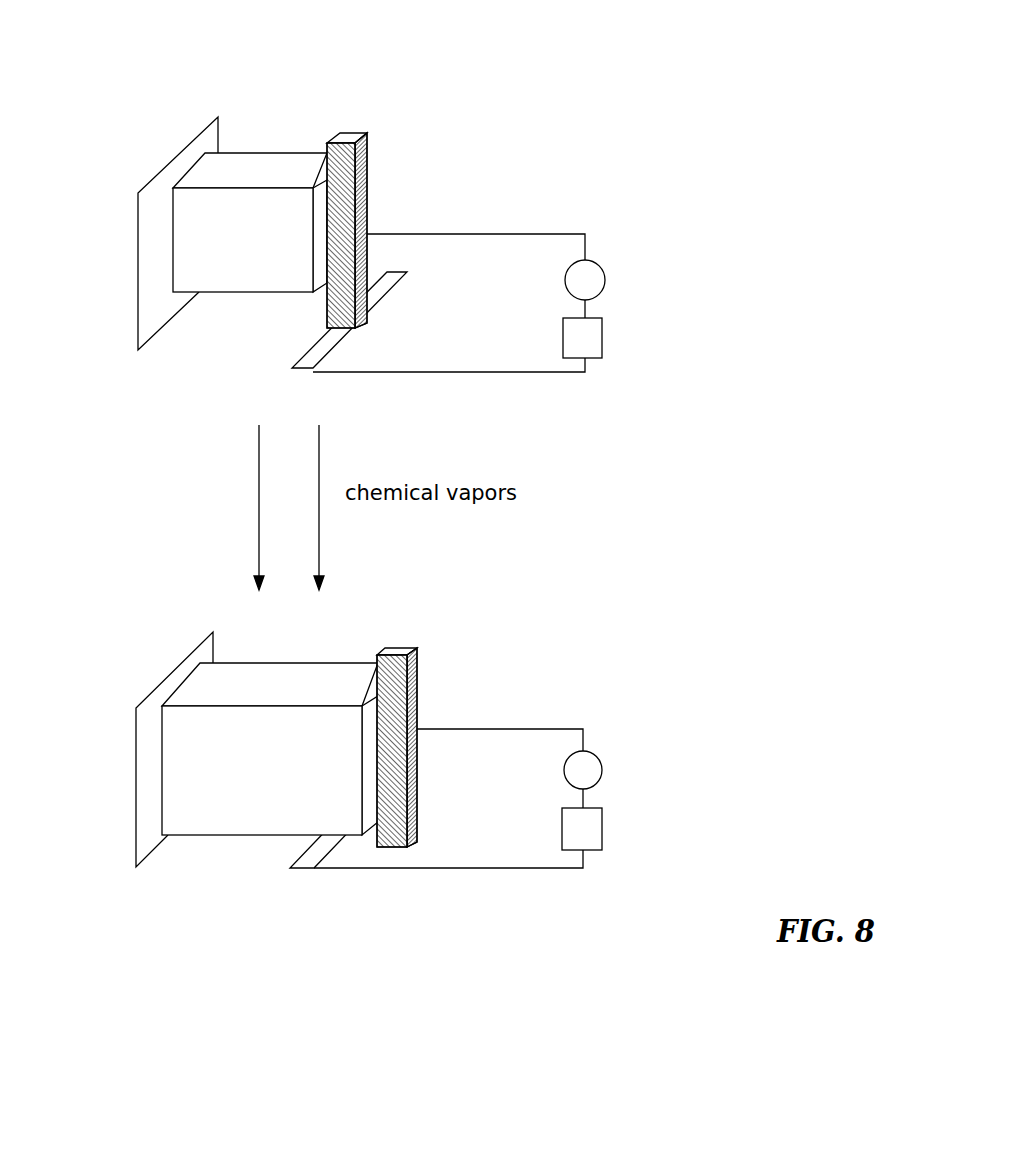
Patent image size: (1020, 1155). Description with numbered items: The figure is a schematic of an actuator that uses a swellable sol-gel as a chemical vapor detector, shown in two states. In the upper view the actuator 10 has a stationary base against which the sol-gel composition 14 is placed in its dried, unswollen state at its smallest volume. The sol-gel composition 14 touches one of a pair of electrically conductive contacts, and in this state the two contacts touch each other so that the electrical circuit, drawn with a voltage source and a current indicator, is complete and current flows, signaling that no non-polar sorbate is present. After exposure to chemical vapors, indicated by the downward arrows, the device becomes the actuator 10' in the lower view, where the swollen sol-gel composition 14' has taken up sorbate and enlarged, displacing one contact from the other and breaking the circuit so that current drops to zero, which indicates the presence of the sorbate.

The actuator 10 is at (453, 207).
The actuator (swollen state) 10' is at (411, 754).
The sol-gel composition 14 is at (250, 157).
The swollen sol-gel composition 14' is at (237, 818).